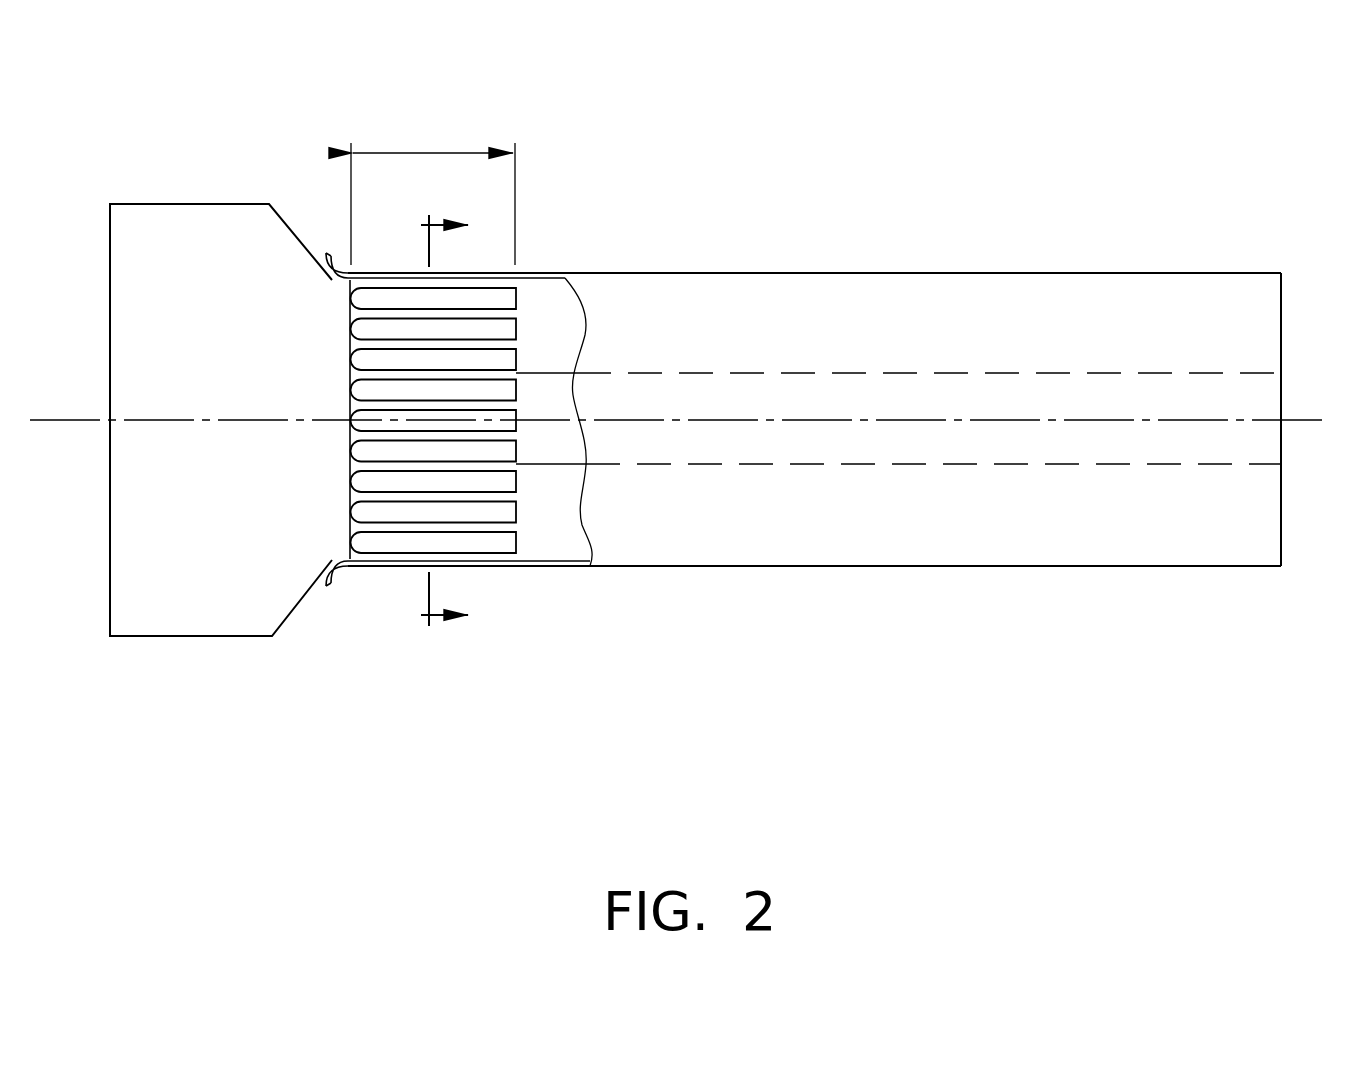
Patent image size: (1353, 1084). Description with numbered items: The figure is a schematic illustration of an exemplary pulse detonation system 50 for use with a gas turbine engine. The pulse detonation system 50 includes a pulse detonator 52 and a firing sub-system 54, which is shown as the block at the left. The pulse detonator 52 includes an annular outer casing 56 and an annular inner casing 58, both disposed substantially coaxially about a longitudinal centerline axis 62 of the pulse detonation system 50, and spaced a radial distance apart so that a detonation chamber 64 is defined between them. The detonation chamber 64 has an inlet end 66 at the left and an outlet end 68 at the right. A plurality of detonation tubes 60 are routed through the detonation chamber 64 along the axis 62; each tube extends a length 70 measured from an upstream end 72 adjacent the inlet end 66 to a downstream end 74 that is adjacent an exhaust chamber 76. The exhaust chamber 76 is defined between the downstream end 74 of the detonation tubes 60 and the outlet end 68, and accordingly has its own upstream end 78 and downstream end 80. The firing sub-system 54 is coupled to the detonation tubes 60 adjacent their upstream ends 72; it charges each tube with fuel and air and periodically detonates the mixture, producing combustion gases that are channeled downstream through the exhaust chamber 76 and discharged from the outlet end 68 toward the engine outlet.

The pulse detonation system 50 is at (163, 125).
The pulse detonator 52 is at (638, 245).
The firing sub-system 54 is at (206, 357).
The outer casing 56 is at (810, 272).
The inner casing 58 is at (935, 373).
The detonation tubes 60 is at (368, 393).
The longitudinal centerline axis 62 is at (140, 422).
The detonation chamber 64 is at (716, 318).
The inlet end 66 is at (313, 250).
The outlet end 68 is at (1293, 552).
The length 70 is at (470, 152).
The upstream end 72 is at (345, 538).
The downstream end 74 is at (516, 295).
The exhaust chamber 76 is at (972, 297).
The upstream end 78 is at (572, 532).
The downstream end 80 is at (1263, 288).